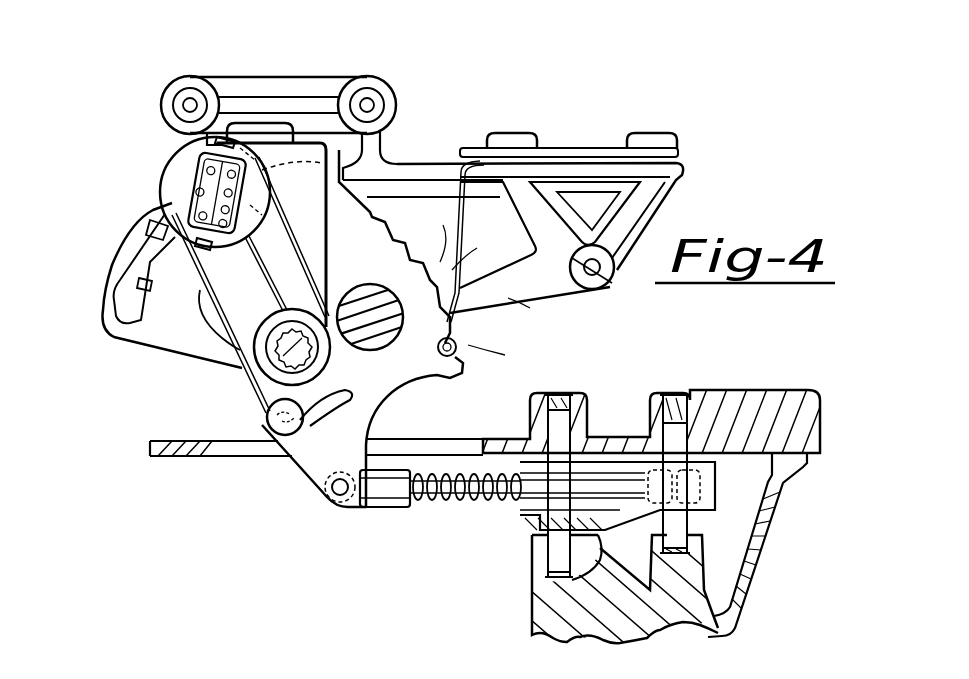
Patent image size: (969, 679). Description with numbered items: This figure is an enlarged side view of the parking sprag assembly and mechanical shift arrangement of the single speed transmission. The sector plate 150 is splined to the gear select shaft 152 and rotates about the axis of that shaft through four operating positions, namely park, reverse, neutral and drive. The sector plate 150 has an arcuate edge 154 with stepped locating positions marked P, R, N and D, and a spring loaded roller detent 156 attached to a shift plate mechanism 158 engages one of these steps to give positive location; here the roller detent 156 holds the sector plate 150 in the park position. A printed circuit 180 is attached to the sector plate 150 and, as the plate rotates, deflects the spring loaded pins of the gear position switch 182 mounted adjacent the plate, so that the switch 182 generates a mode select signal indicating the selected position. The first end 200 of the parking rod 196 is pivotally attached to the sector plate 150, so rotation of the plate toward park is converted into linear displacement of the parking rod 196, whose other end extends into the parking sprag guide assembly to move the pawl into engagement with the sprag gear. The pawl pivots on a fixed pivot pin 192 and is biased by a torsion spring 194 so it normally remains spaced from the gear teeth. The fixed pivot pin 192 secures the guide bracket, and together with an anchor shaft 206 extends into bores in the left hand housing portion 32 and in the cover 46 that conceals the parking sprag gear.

The left hand housing portion 32 is at (810, 390).
The cover 46 is at (658, 613).
The sector plate 150 is at (167, 327).
The gear select shaft 152 is at (262, 400).
The arcuate edge 154 is at (372, 165).
The spring loaded roller detent 156 is at (470, 332).
The shift plate mechanism 158 is at (298, 93).
The printed circuit 180 is at (150, 226).
The gear position switch 182 is at (190, 173).
The fixed pivot pin 192 is at (566, 558).
The torsion spring 194 is at (572, 580).
The parking rod 196 is at (455, 497).
The first end 200 is at (345, 505).
The anchor shaft 206 is at (720, 331).